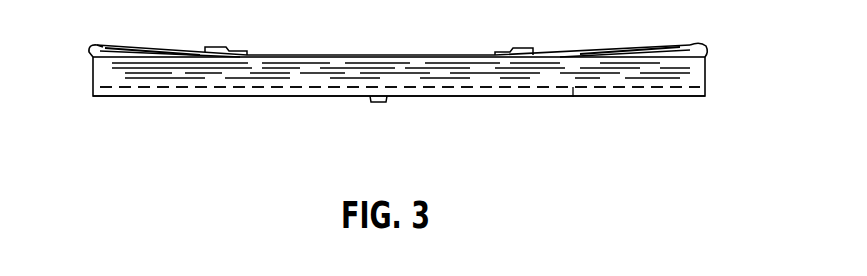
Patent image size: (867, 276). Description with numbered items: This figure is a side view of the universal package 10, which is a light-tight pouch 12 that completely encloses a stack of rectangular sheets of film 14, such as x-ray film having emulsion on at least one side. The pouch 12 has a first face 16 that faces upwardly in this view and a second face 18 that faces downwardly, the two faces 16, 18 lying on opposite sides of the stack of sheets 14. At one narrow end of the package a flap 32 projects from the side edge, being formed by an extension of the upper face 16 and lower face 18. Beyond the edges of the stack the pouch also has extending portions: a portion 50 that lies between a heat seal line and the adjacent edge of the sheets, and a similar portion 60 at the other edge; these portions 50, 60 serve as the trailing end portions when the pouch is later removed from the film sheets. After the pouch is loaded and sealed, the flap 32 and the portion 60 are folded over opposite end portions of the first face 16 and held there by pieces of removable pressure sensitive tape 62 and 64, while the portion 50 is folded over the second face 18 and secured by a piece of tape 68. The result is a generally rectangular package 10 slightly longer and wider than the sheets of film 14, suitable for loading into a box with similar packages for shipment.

The universal package 10 is at (717, 98).
The light-tight pouch 12 is at (124, 100).
The sheets of film 14 is at (291, 63).
The first face 16 is at (387, 56).
The second face 18 is at (573, 97).
The flap 32 is at (103, 44).
The extending portion of pouch 50 is at (330, 88).
The extending portion of pouch 60 is at (687, 46).
The pressure sensitive tape 62 is at (226, 51).
The pressure sensitive tape 64 is at (518, 50).
The pressure sensitive tape 68 is at (380, 101).